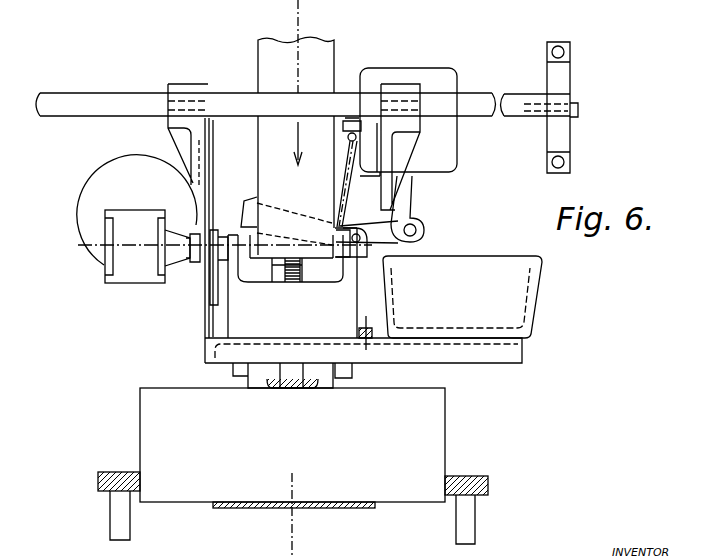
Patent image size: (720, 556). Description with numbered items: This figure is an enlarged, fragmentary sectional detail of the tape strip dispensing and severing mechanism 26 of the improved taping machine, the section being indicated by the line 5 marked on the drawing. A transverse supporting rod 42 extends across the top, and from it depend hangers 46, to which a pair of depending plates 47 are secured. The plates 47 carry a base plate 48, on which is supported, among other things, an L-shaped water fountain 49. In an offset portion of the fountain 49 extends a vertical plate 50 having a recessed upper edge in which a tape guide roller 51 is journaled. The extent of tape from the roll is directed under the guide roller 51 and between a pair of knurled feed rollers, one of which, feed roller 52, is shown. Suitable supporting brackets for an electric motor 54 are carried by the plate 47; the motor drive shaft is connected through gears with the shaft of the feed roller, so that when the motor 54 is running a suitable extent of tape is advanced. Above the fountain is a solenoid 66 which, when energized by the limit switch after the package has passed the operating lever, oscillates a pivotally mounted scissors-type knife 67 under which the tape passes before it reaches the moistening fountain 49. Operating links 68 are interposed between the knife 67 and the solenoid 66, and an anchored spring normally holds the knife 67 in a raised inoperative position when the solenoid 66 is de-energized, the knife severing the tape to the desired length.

The section line 5- 5 is at (310, 24).
The tape strip dispensing and severing mechanism 26 is at (196, 311).
The transverse supporting rod 42 is at (136, 102).
The hanger 46 is at (185, 150).
The depending plate 47 is at (216, 150).
The base plate 48 is at (508, 357).
The L-shaped water fountain 49 is at (438, 285).
The vertical plate 50 is at (262, 302).
The tape guide roller 51 is at (243, 237).
The knurled feed roller 52 is at (293, 284).
The electric motor 54 is at (93, 207).
The solenoid 66 is at (429, 74).
The knife 67 is at (252, 206).
The operating link 68 is at (427, 223).